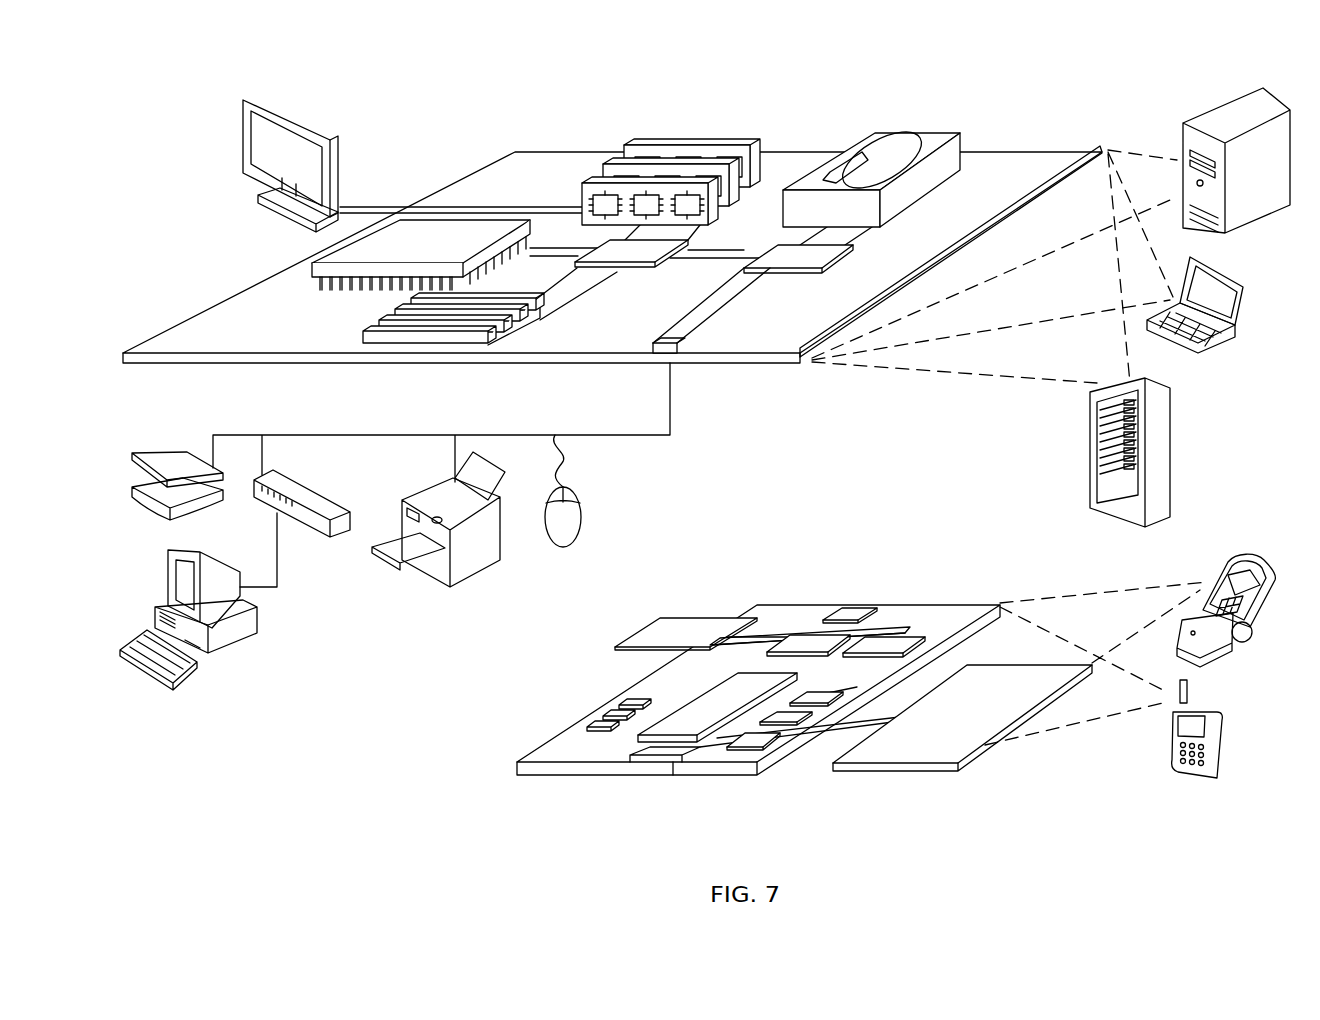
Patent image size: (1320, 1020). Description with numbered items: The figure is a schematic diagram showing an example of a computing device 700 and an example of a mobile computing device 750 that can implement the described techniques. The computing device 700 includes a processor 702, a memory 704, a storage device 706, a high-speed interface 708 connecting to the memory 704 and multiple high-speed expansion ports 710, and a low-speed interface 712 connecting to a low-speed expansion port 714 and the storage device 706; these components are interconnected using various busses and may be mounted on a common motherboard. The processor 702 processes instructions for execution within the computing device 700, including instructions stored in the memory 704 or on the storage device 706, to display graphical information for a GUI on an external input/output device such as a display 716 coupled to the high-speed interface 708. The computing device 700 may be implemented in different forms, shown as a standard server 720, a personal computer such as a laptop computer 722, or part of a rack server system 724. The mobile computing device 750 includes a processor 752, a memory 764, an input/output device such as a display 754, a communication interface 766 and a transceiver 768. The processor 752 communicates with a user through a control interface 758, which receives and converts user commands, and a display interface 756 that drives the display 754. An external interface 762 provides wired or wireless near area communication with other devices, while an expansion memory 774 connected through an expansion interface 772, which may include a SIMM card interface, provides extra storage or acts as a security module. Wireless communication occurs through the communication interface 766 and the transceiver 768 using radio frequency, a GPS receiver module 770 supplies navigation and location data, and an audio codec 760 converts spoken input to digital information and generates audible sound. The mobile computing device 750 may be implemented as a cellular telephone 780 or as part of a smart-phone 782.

The computing device 700 is at (436, 126).
The processor 702 is at (310, 268).
The memory 704 is at (636, 144).
The storage device 706 is at (862, 131).
The high-speed interface 708 is at (607, 255).
The high-speed expansion ports 710 is at (380, 328).
The low-speed interface 712 is at (778, 253).
The low-speed expansion port 714 is at (680, 354).
The display 716 is at (250, 100).
The standard server 720 is at (1185, 140).
The laptop computer 722 is at (1244, 290).
The rack server system 724 is at (1090, 478).
The mobile computing device 750 is at (493, 774).
The processor 752 is at (690, 731).
The display 754 is at (925, 752).
The display interface 756 is at (770, 746).
The control interface 758 is at (798, 721).
The audio codec 760 is at (820, 700).
The external interface 762 is at (657, 764).
The memory 764 is at (616, 725).
The communication interface 766 is at (803, 640).
The transceiver 768 is at (887, 640).
The GPS receiver module 770 is at (855, 608).
The expansion interface 772 is at (753, 617).
The expansion memory 774 is at (748, 618).
The cellular telephone 780 is at (1228, 557).
The smart-phone 782 is at (1170, 737).